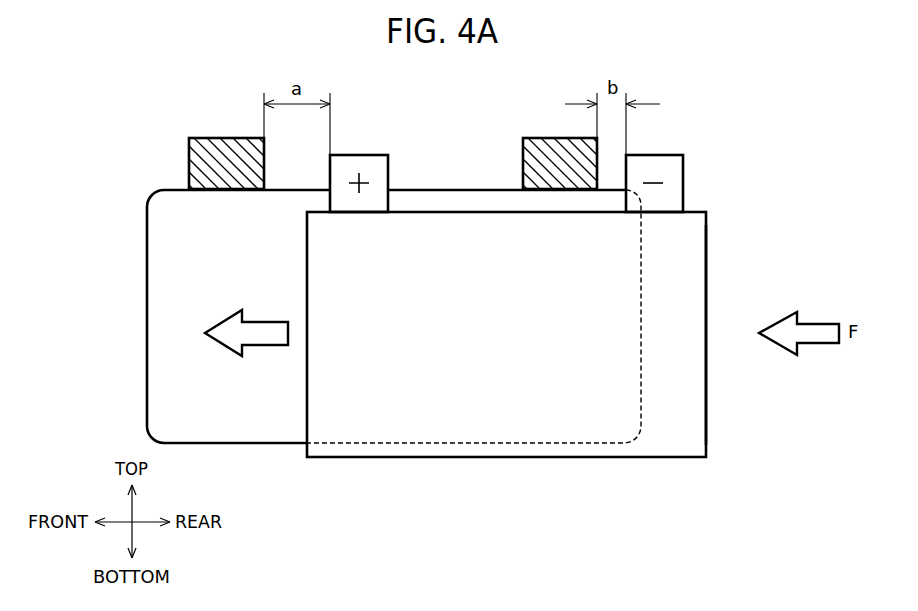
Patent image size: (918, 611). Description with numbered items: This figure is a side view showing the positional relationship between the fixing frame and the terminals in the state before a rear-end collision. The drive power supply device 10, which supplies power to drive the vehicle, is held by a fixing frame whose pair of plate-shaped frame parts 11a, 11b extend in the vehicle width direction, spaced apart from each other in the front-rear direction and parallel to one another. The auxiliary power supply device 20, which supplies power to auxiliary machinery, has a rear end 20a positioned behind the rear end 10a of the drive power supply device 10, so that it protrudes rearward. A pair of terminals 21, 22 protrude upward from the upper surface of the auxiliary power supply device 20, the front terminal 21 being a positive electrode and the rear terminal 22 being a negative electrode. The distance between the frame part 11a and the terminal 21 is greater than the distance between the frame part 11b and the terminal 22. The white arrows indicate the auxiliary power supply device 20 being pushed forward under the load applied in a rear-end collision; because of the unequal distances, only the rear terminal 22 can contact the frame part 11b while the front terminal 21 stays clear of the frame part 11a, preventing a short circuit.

The drive power supply device 10 is at (146, 280).
The rear end of the drive power supply device 10a is at (641, 373).
The frame part 11a is at (228, 135).
The frame part 11b is at (542, 135).
The auxiliary power supply device 20 is at (707, 257).
The rear end of the auxiliary power supply device 20a is at (706, 292).
The terminal 21 is at (365, 150).
The terminal 22 is at (657, 154).